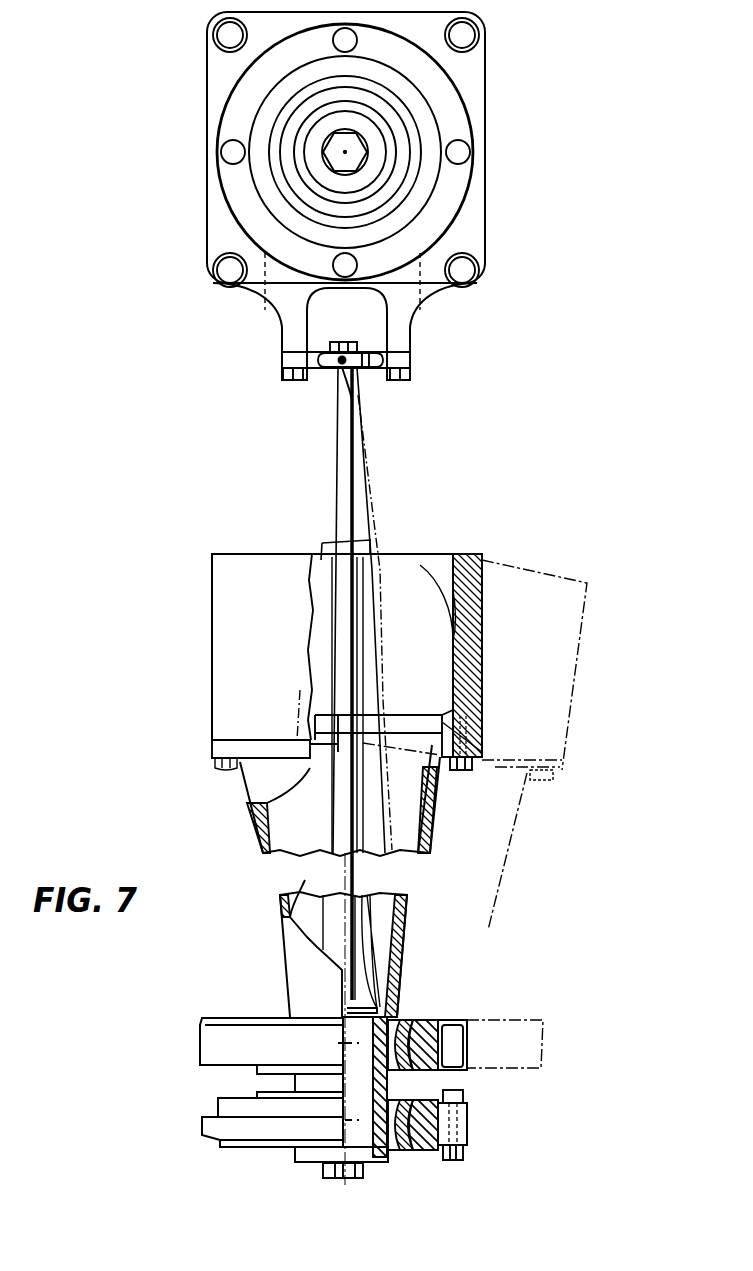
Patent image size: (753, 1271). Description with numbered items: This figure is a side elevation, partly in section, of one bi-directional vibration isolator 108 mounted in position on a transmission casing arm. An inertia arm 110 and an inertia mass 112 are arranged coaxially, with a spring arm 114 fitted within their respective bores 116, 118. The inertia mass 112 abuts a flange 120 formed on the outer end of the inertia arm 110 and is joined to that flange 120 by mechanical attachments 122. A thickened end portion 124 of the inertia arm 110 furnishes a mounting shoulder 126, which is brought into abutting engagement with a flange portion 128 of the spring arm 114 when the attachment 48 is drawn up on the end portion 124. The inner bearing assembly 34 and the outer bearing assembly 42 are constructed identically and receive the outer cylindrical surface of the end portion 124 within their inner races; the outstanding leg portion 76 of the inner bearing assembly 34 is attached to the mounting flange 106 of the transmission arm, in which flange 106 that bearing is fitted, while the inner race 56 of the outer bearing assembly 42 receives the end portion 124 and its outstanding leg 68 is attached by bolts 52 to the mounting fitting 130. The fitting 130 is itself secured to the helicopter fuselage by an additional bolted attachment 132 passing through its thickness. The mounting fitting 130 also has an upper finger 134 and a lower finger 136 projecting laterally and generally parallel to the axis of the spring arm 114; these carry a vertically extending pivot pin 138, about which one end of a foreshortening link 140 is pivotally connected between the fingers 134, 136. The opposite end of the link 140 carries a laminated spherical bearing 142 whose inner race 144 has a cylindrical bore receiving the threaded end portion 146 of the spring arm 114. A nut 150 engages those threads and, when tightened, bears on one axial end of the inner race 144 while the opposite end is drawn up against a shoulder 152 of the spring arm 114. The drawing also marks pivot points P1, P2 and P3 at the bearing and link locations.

The inner bearing assembly 34 is at (478, 1012).
The outer bearing assembly 42 is at (430, 122).
The attachment 48 is at (333, 148).
The bolts 52 is at (464, 1157).
The inner race 56 is at (393, 1130).
The outstanding leg 68 is at (467, 1146).
The outstanding leg portion 76 is at (470, 1027).
The mounting flange 106 is at (220, 1043).
The vibration isolator 108 is at (532, 908).
The inertia arm 110 is at (260, 838).
The inertia mass 112 is at (222, 653).
The spring arm 114 is at (355, 922).
The bore 116 is at (297, 917).
The bore 118 is at (453, 617).
The flange 120 is at (483, 730).
The mechanical attachments 122 is at (475, 771).
The thickened end portion 124 is at (387, 1078).
The mounting shoulder 126 is at (400, 1016).
The flange portion 128 is at (365, 996).
The mounting fitting 130 is at (477, 200).
The bolted attachment 132 is at (463, 272).
The upper finger 134 is at (268, 302).
The lower finger 136 is at (400, 306).
The pivot pin 138 is at (330, 357).
The foreshortening link 140 is at (380, 363).
The laminated spherical bearing 142 is at (373, 367).
The inner race 144 is at (358, 372).
The end portion 146 is at (362, 372).
The nut 150 is at (340, 342).
The shoulder 152 is at (342, 370).
The pivot point P1 is at (343, 1120).
The pivot point P2 is at (343, 1043).
The pivot point P3 is at (339, 361).